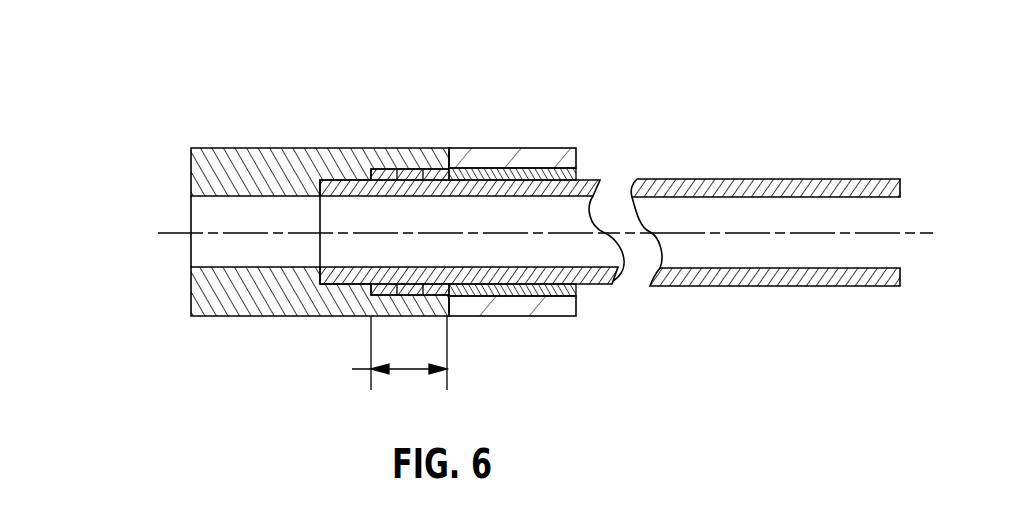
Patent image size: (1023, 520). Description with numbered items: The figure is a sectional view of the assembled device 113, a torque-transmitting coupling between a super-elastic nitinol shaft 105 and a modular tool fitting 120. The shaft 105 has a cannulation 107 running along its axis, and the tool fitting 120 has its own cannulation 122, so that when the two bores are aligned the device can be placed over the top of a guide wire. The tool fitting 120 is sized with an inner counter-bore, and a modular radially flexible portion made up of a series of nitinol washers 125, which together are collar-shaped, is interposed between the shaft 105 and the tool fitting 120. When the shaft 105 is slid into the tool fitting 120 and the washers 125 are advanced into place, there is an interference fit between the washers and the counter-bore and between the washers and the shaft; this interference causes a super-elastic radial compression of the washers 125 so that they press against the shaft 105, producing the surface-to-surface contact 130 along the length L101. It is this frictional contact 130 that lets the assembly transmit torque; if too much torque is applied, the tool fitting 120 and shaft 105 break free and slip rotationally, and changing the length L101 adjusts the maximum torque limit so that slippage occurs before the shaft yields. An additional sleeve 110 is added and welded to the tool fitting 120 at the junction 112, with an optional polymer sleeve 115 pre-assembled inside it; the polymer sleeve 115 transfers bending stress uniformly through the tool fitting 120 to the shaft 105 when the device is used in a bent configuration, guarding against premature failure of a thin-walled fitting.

The shaft 105 is at (733, 179).
The cannulation 107 is at (892, 217).
The sleeve 110 is at (543, 148).
The junction 112 is at (450, 168).
The assembled device 113 is at (620, 106).
The polymer sleeve 115 is at (578, 294).
The tool fitting 120 is at (273, 148).
The cannulation 122 is at (199, 248).
The nitinol washers 125 is at (398, 168).
The surface-to-surface contact 130 is at (428, 264).
The length L101 is at (377, 353).